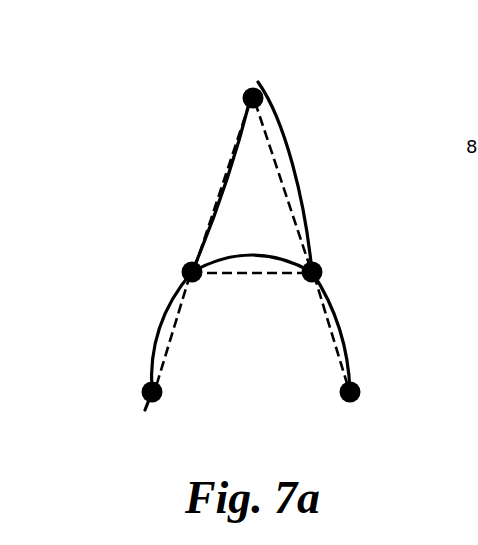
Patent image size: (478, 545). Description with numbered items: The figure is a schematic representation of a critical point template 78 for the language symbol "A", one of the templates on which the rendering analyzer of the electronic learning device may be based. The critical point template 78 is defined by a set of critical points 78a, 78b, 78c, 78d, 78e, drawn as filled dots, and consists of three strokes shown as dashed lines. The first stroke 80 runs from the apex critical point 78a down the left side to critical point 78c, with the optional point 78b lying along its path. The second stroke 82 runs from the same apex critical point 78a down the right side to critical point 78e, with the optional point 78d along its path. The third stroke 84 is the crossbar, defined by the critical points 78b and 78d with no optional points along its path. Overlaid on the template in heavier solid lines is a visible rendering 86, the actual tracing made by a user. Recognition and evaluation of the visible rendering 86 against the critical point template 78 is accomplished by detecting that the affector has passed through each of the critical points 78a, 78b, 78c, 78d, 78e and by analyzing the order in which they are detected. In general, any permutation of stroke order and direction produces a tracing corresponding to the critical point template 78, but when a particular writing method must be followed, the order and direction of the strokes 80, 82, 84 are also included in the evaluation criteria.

The critical point template 78 is at (198, 104).
The critical point 78a is at (272, 98).
The critical point 78b is at (183, 268).
The critical point 78c is at (142, 387).
The critical point 78d is at (322, 270).
The critical point 78e is at (360, 390).
The first stroke 80 is at (213, 193).
The second stroke 82 is at (283, 195).
The third stroke 84 is at (252, 277).
The visible rendering 86 is at (287, 138).